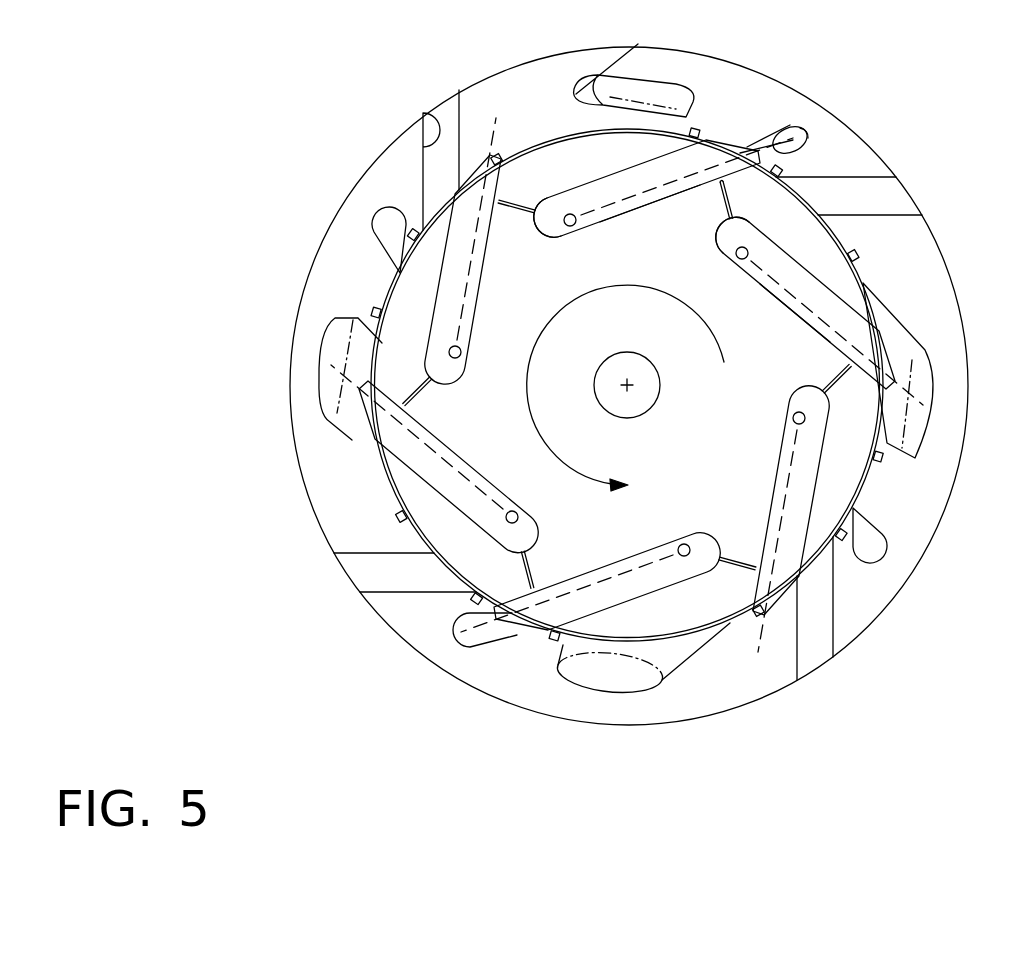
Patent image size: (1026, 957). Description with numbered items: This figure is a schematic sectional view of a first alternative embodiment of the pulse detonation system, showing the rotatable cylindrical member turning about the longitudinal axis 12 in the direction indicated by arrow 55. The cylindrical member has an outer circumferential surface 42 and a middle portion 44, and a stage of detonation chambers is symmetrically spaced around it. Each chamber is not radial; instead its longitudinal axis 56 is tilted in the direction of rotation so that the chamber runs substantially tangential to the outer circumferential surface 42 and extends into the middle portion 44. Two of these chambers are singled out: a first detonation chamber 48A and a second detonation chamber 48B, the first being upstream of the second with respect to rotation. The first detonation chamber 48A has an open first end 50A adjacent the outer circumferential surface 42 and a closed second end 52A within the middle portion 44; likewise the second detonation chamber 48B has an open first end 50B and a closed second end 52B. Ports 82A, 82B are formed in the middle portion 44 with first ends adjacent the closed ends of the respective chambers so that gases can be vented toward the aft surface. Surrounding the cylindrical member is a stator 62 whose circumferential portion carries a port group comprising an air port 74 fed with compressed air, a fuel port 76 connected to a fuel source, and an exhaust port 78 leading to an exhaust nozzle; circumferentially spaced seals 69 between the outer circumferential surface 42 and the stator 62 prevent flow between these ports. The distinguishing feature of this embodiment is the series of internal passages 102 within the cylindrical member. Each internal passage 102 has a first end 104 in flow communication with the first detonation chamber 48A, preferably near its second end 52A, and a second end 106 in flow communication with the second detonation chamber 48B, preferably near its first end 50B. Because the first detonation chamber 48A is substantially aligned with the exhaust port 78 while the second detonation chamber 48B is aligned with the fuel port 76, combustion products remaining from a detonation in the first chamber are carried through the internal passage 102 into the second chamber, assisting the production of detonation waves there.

The longitudinal axis 12 is at (637, 380).
The outer circumferential surface 42 is at (855, 240).
The middle portion 44 is at (847, 473).
The first detonation chamber 48A is at (800, 330).
The second detonation chamber 48B is at (697, 210).
The first end of first detonation chamber 50A is at (868, 312).
The first end of second detonation chamber 50B is at (717, 152).
The second end of first detonation chamber 52A is at (712, 236).
The second end of second detonation chamber 52B is at (538, 212).
The arrow indicating direction of rotation 55 is at (528, 420).
The longitudinal axis through detonation chambers 56 is at (782, 140).
The stator 62 is at (768, 60).
The seals 69 is at (793, 172).
The air port 74 is at (432, 118).
The fuel port 76 is at (810, 138).
The exhaust port 78 is at (610, 80).
The port of first detonation chamber 82A is at (745, 262).
The port of second detonation chamber 82B is at (608, 218).
The internal passage 102 is at (430, 388).
The first end of internal passage 104 is at (755, 250).
The second end of internal passage 106 is at (722, 176).